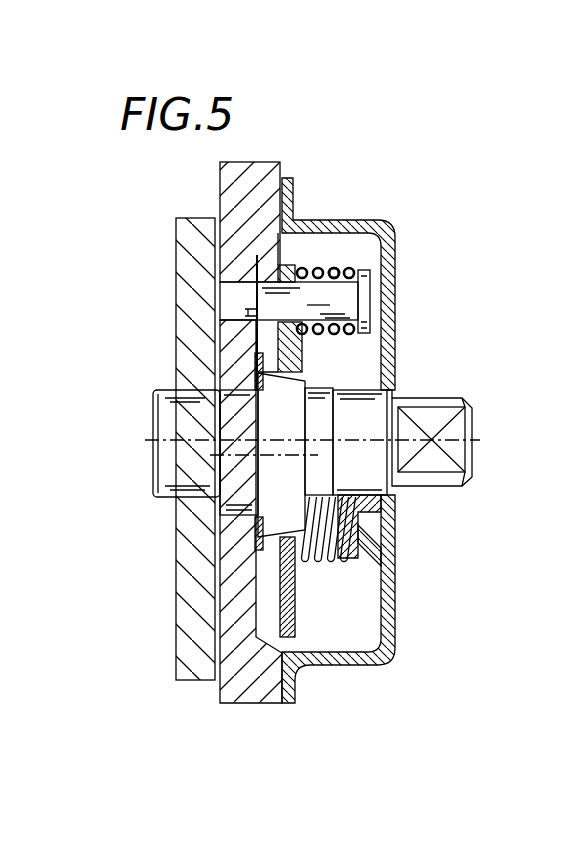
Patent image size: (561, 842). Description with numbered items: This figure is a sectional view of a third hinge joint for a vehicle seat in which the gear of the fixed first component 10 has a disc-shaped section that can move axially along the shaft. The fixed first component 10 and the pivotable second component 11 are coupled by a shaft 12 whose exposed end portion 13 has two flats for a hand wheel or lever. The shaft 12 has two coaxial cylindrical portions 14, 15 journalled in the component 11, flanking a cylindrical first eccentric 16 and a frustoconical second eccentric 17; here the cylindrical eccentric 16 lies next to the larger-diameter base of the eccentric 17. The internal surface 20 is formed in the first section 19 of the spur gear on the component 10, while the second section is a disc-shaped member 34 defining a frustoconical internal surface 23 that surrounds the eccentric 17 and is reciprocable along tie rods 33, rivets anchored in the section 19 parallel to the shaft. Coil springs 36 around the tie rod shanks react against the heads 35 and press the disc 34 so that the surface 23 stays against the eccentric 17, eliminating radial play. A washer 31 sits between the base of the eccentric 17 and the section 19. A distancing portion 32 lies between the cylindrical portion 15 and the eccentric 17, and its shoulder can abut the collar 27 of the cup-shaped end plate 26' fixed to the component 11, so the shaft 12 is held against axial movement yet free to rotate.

The first component 10 is at (188, 462).
The second component 11 is at (185, 267).
The shaft 12 is at (489, 389).
The end portion 13 is at (443, 485).
The cylindrical portion 14 is at (196, 428).
The cylindrical portion 15 is at (367, 481).
The first eccentric 16 is at (250, 484).
The second eccentric 17 is at (292, 428).
The first section 19 is at (230, 608).
The internal surface 20 is at (222, 360).
The frustoconical internal surface 23 is at (293, 373).
The cup-shaped end plate 26' is at (405, 556).
The collar 27 is at (397, 512).
The washer 31 is at (254, 532).
The distancing portion 32 is at (325, 413).
The tie rods 33 is at (307, 560).
The disc-shaped member 34 is at (293, 612).
The heads 35 is at (363, 285).
The coil springs 36 is at (333, 272).